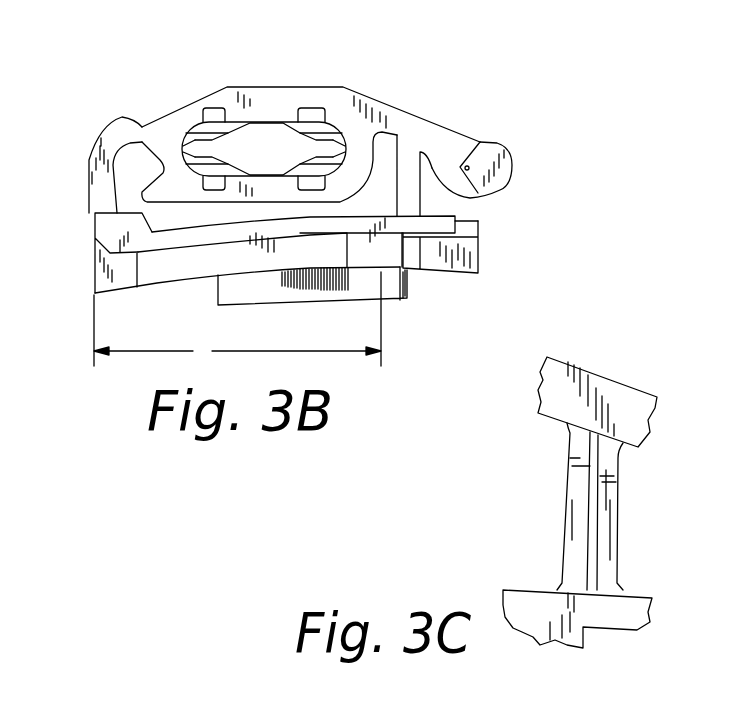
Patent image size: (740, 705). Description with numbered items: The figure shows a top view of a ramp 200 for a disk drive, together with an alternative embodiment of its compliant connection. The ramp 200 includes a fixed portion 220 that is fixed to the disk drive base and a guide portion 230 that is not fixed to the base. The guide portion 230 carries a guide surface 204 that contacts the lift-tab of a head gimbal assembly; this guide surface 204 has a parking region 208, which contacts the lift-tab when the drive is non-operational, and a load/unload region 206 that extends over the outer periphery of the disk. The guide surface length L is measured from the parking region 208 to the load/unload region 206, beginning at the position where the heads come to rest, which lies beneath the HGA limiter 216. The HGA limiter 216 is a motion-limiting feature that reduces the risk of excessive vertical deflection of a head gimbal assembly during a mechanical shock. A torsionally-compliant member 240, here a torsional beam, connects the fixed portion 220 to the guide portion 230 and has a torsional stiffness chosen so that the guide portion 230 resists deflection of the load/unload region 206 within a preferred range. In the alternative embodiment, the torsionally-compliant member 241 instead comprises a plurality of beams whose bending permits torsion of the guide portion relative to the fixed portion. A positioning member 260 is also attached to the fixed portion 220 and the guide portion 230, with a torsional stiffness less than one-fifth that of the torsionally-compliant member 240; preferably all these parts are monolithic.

In FIG. 3B, the ramp 200 is at (150, 64).
In FIG. 3B, the guide surface 204 is at (153, 272).
In FIG. 3B, the load/unload region 206 is at (100, 275).
In FIG. 3B, the parking region 208 is at (413, 265).
In FIG. 3B, the HGA limiter 216 is at (370, 253).
In FIG. 3C, the HGA limiter 216 is at (535, 625).
In FIG. 3B, the fixed portion 220 is at (360, 107).
In FIG. 3C, the fixed portion 220 is at (627, 393).
In FIG. 3B, the guide portion 230 is at (222, 230).
In FIG. 3B, the torsionally-compliant member 240 is at (408, 178).
In FIG. 3C, the torsionally-compliant member 241 is at (608, 517).
In FIG. 3B, the positioning member 260 is at (97, 182).